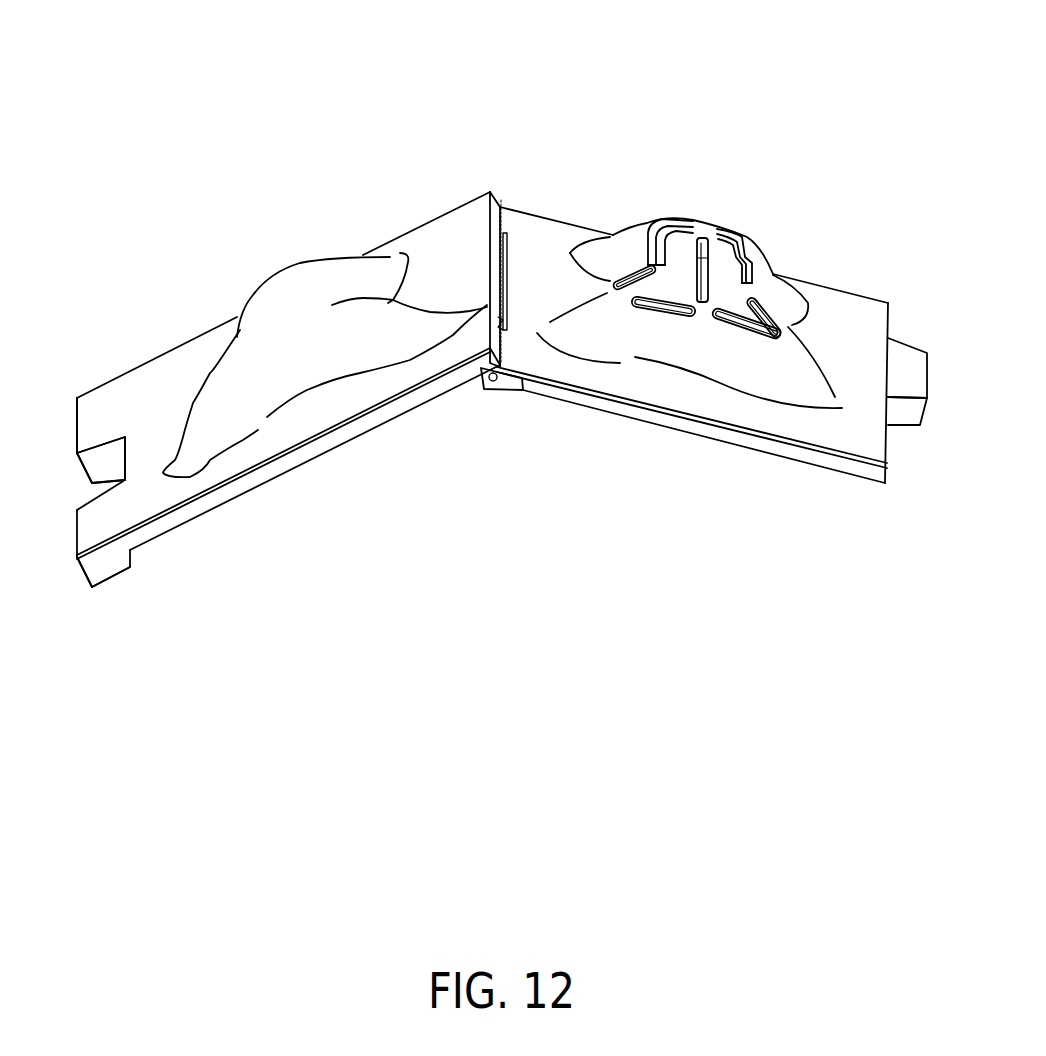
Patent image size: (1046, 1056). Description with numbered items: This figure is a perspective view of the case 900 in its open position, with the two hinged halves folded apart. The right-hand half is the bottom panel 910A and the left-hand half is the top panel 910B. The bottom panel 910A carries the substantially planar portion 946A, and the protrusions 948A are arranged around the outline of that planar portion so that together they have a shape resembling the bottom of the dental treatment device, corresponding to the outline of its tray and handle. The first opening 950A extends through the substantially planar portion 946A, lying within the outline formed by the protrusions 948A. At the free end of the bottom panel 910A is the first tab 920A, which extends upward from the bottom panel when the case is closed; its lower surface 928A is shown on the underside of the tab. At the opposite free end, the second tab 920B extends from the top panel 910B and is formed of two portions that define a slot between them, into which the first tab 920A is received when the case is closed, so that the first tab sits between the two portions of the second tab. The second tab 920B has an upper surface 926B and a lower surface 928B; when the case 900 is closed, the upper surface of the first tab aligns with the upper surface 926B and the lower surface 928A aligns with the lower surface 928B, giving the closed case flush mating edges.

The case 900 is at (144, 124).
The bottom panel 910A is at (692, 423).
The top panel 910B is at (262, 475).
The first tab 920A is at (927, 402).
The second tab 920B is at (97, 468).
The upper surface of second tab 926B is at (100, 415).
The lower surface of first tab 928A is at (912, 362).
The lower surface of second tab 928B is at (130, 572).
The substantially planar portion 946A is at (677, 242).
The protrusions 948A is at (647, 226).
The first opening 950A is at (718, 262).